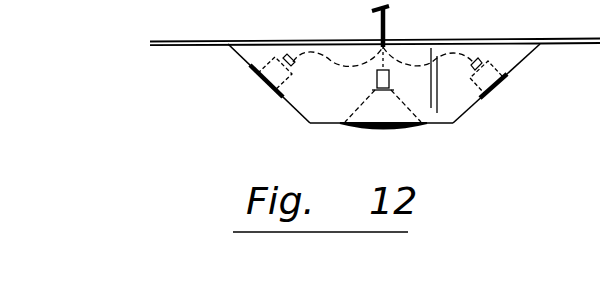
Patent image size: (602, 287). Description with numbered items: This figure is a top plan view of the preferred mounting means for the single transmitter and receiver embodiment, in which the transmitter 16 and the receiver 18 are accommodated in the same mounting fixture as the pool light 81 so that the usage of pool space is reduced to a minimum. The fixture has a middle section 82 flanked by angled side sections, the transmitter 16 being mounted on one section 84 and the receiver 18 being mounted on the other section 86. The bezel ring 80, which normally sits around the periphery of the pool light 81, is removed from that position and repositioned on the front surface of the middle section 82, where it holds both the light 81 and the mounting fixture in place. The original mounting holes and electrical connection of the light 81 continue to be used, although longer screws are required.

The transmitter 16 is at (263, 98).
The receiver 18 is at (496, 83).
The bezel ring 80 is at (392, 133).
The pool light 81 is at (373, 102).
The middle section 82 is at (439, 125).
The section 84 is at (222, 47).
The section 86 is at (547, 46).